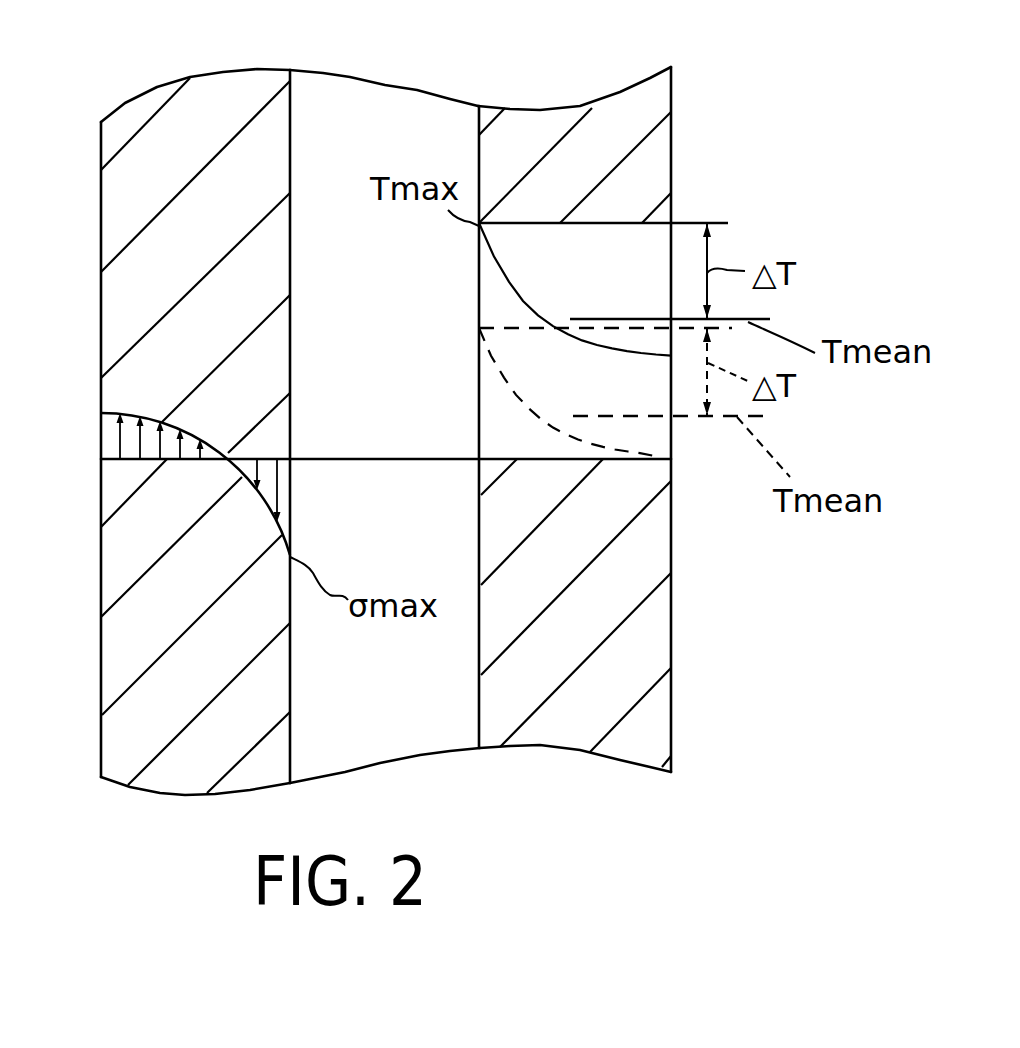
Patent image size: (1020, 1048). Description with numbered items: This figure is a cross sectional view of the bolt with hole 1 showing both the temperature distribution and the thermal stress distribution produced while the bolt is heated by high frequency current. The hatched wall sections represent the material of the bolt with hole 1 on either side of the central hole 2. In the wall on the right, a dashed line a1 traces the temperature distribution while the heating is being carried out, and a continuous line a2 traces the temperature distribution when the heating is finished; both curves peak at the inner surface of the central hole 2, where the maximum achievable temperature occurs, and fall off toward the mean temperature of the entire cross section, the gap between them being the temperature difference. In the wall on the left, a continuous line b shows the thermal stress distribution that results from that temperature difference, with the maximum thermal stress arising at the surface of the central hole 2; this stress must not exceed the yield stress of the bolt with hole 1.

The bolt with hole 1 is at (115, 322).
The central hole 2 is at (402, 115).
The thermal stress distribution b is at (187, 432).
The temperature distribution during heating a1 is at (513, 397).
The temperature distribution when heating is finished a2 is at (520, 296).